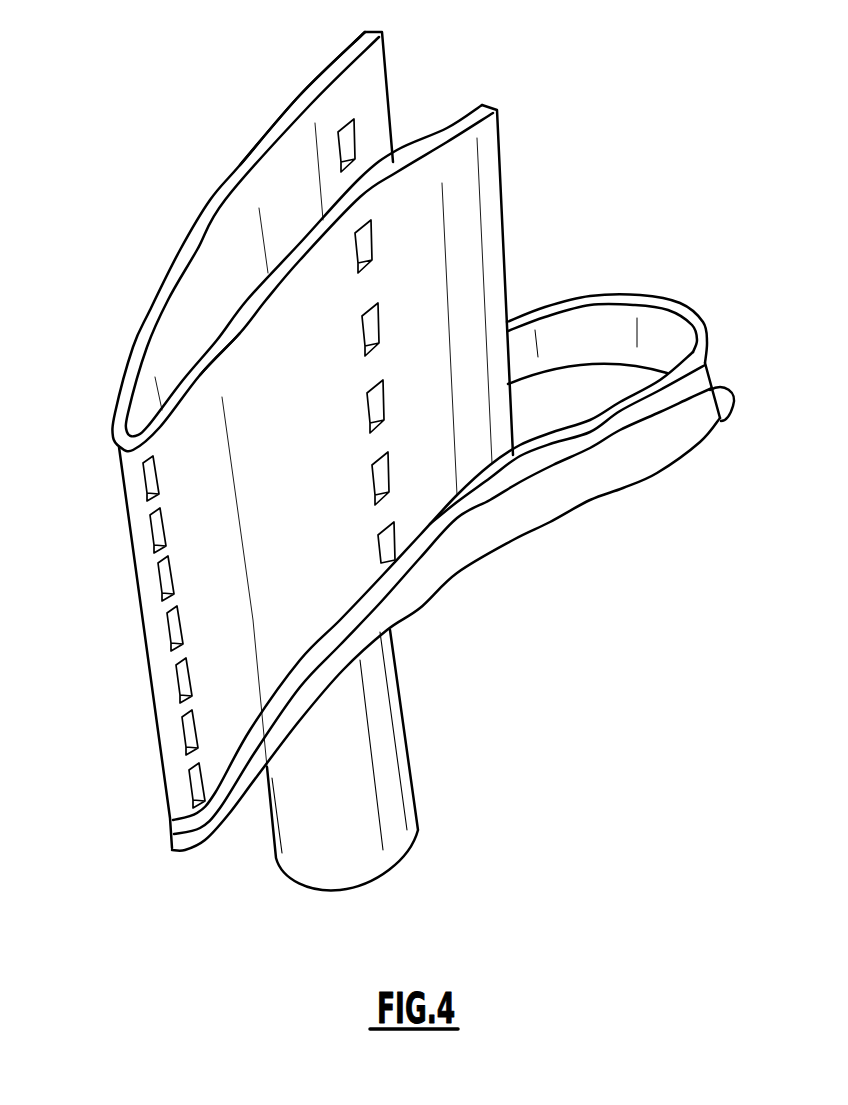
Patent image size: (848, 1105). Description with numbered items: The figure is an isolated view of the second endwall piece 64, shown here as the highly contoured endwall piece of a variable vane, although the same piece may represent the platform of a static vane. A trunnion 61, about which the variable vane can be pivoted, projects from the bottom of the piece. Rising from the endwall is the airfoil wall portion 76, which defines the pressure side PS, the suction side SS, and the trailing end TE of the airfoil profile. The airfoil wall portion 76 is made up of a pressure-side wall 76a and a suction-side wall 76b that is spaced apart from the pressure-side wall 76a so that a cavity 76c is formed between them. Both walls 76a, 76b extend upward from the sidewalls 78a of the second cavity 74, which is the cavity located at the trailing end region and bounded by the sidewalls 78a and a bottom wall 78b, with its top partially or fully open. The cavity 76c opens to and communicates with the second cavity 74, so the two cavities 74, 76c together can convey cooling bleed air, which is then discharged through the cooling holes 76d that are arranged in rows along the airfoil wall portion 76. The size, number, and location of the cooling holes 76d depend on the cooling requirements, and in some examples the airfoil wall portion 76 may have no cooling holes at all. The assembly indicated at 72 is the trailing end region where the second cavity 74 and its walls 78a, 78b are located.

The trunnion 61 is at (392, 798).
The second endwall piece 64 is at (86, 790).
The trailing edge cooling assembly 72 is at (491, 556).
The second cavity 74 is at (597, 378).
The airfoil wall portion 76 is at (373, 395).
The pressure-side wall 76a is at (500, 139).
The suction-side wall 76b is at (386, 48).
The cavity 76c is at (435, 102).
The cooling holes 76d is at (380, 322).
The sidewalls 78a is at (607, 428).
The bottom wall 78b is at (638, 377).
The suction side SS is at (231, 183).
The pressure side PS is at (230, 336).
The trailing end TE is at (110, 588).